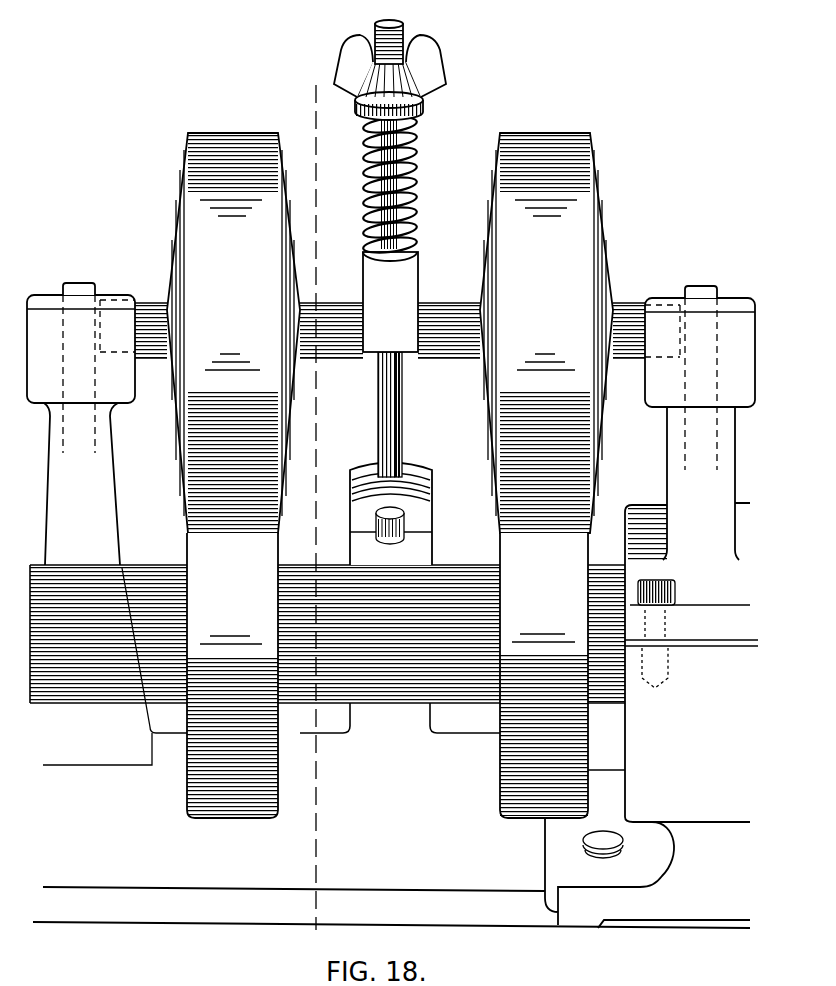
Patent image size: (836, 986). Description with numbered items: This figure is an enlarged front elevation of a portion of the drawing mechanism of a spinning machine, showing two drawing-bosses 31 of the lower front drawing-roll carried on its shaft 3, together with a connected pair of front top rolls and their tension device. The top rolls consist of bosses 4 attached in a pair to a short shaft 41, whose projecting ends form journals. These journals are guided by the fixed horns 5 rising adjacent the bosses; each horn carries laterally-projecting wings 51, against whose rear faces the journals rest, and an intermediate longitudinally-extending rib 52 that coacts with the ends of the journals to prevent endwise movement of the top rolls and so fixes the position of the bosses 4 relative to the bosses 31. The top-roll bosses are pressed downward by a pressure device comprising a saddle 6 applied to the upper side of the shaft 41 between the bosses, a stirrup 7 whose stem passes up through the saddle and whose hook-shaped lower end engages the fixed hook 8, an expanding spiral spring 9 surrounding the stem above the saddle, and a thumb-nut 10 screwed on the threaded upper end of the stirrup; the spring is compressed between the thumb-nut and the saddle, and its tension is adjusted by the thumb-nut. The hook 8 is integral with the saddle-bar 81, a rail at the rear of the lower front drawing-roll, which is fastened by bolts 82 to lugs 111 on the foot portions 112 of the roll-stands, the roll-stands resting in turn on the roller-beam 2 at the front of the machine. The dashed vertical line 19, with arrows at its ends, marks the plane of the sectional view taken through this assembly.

The roller-beam 2 is at (350, 921).
The shaft of the lower front drawing-roll 3 is at (370, 705).
The boss of front top roll 4 is at (625, 208).
The horn 5 is at (396, 530).
The saddle 6 is at (405, 290).
The stirrup 7 is at (405, 430).
The hook 8 is at (432, 543).
The expanding spiral spring 9 is at (408, 176).
The thumb-nut 10 is at (447, 68).
The section line 19 19 is at (299, 939).
The drawing-boss 31 is at (500, 792).
The short shaft 41 is at (461, 312).
The wing 51 is at (728, 298).
The rib 52 is at (698, 286).
The saddle-bar 81 is at (445, 735).
The bolt 82 is at (598, 853).
The lug 111 is at (548, 912).
The foot portion 112 is at (708, 870).